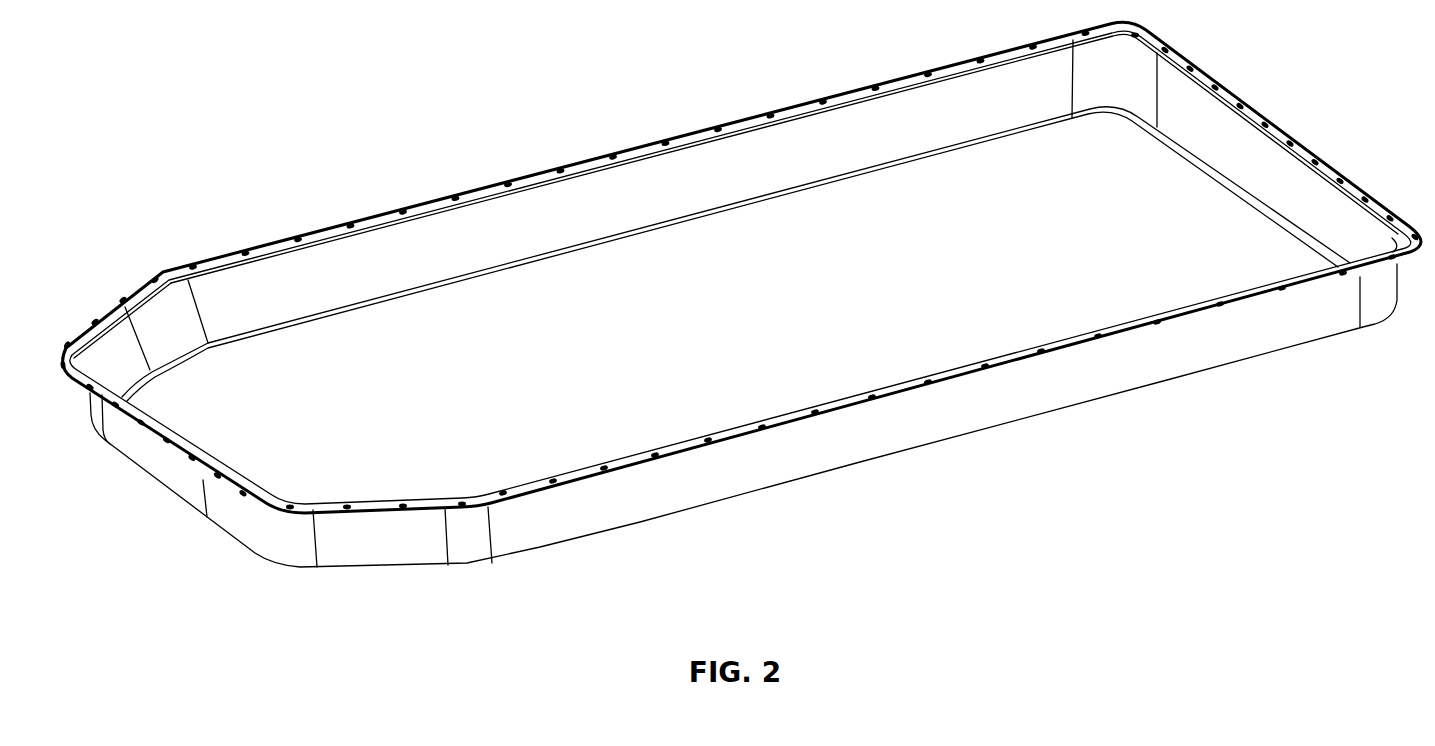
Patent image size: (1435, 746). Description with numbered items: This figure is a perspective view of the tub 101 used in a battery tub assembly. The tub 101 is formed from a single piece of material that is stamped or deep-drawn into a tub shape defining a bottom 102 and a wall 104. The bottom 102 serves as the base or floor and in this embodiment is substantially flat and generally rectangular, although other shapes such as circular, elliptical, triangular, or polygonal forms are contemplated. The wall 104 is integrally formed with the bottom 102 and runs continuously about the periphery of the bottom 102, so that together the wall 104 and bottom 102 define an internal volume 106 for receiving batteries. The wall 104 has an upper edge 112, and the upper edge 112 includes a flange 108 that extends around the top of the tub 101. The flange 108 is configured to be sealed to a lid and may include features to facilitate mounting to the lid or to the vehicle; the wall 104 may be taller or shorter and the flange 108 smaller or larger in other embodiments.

The tub 101 is at (731, 297).
The bottom 102 is at (340, 343).
The wall 104 is at (700, 490).
The internal volume 106 is at (535, 295).
The flange 108 is at (1278, 134).
The upper edge 112 is at (360, 227).